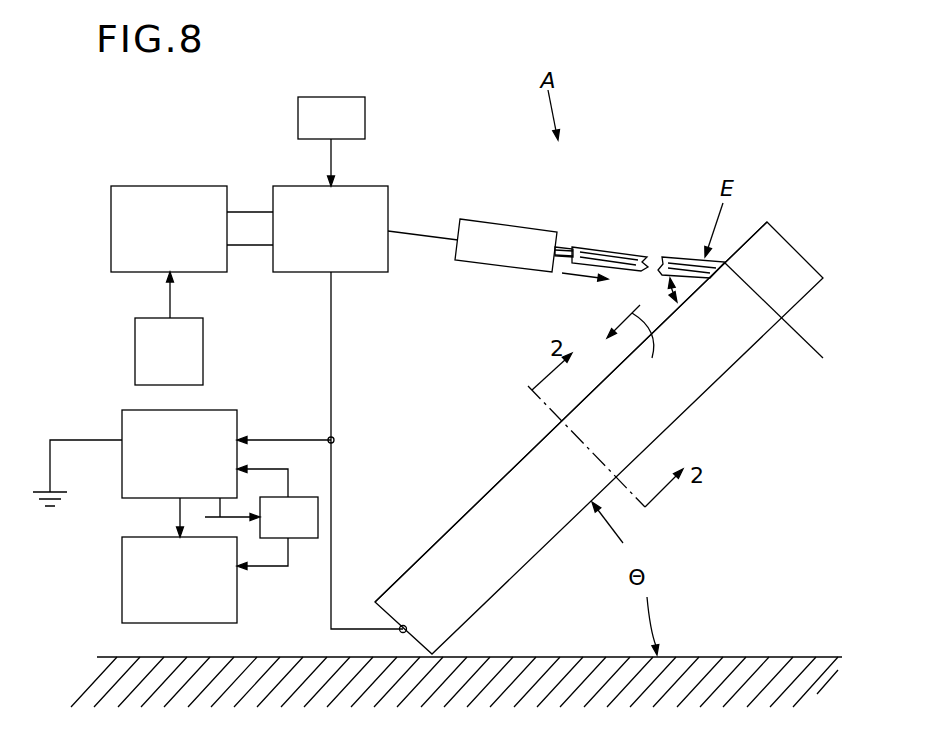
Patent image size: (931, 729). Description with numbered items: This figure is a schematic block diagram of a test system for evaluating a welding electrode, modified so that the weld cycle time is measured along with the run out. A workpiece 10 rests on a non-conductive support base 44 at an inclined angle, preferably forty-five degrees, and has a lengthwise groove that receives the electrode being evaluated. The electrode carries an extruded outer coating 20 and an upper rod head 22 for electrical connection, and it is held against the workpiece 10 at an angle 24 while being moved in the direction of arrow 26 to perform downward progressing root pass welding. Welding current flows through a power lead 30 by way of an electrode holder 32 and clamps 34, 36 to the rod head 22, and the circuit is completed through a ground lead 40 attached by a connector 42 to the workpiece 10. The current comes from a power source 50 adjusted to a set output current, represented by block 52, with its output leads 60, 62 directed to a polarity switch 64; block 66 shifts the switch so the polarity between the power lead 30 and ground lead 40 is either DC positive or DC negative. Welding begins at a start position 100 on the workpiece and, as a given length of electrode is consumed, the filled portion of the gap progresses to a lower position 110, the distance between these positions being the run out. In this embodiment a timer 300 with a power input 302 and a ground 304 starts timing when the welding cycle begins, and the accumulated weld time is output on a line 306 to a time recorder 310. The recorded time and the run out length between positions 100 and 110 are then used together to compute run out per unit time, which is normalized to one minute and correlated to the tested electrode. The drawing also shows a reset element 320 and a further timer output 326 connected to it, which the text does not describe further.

The workpiece 10 is at (706, 404).
The extruded outer coating 20 is at (625, 272).
The upper rod head 22 is at (558, 240).
The angle 24 is at (687, 292).
The arrow 26 is at (634, 349).
The power lead 30 is at (423, 236).
The electrode holder 32 is at (512, 220).
The clamp 34 is at (538, 250).
The clamp 36 is at (547, 266).
The ground lead 40 is at (332, 378).
The connector 42 is at (406, 629).
The non-conductive support base 44 is at (768, 657).
The power source 50 is at (170, 186).
The set output current block 52 is at (145, 317).
The output lead 60 is at (243, 212).
The output lead 62 is at (245, 246).
The polarity switch 64 is at (370, 187).
The polarity setting block 66 is at (349, 98).
The start position 100 is at (810, 342).
The lower position 110 is at (450, 512).
The timer 300 is at (135, 410).
The power input 302 is at (285, 440).
The ground 304 is at (88, 440).
The line 306 is at (177, 506).
The time recorder 310 is at (122, 600).
The reset switch 320 is at (305, 538).
The timer output to reset switch 326 is at (222, 500).